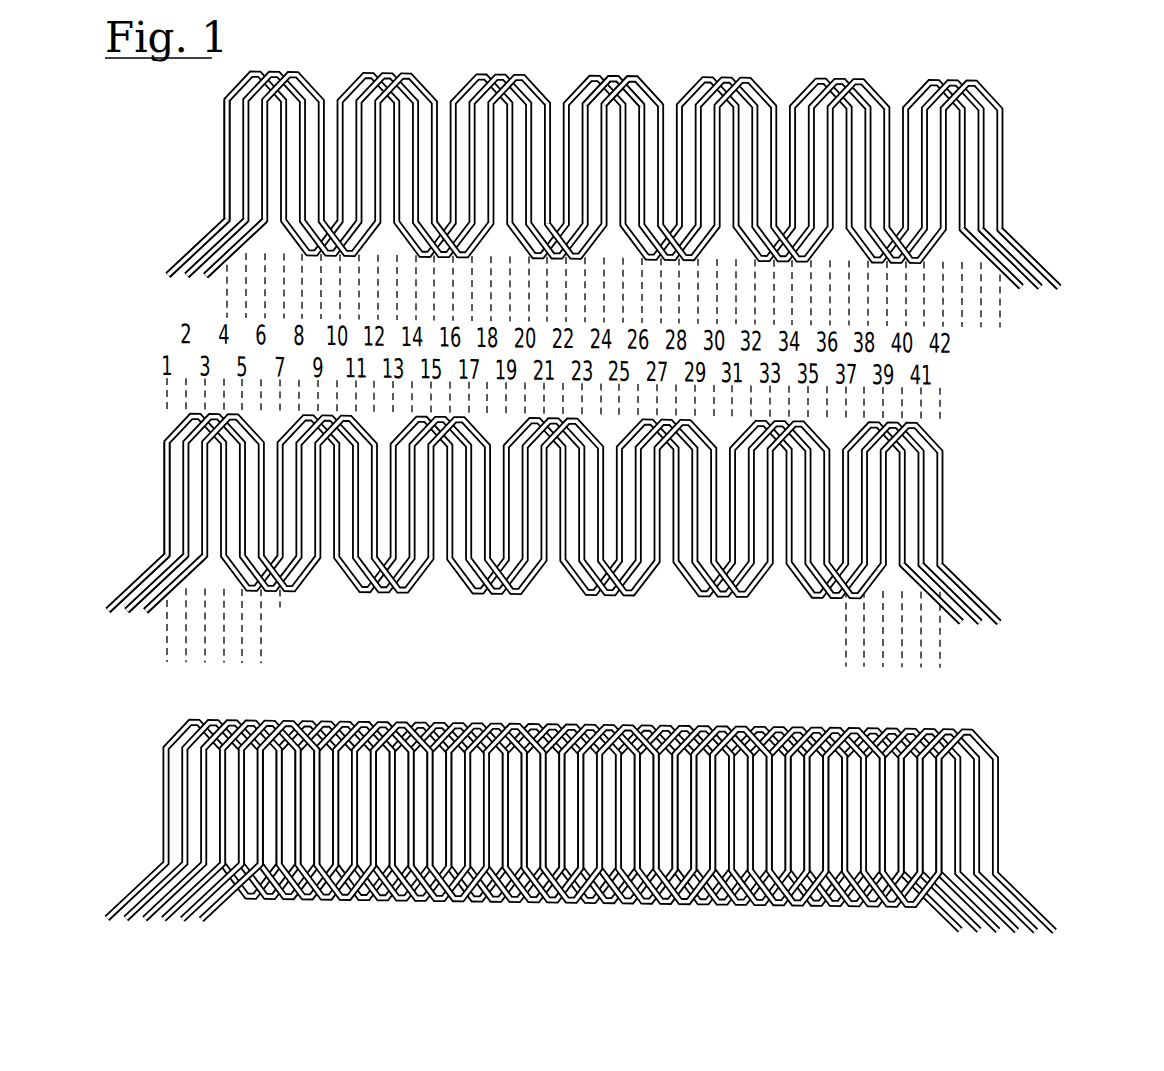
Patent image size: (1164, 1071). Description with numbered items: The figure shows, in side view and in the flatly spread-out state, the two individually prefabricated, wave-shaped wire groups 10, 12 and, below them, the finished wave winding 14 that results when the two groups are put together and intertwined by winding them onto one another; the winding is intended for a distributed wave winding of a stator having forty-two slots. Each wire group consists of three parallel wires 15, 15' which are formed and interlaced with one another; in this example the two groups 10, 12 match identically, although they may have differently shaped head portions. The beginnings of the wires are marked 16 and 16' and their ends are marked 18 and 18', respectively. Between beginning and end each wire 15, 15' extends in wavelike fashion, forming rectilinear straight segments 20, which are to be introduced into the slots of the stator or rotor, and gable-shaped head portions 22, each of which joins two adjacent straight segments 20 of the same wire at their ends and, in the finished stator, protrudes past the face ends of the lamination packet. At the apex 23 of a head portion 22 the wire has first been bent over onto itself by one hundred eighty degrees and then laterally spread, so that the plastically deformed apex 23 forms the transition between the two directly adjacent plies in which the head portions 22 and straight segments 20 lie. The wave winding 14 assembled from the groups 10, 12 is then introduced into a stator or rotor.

The wire group 10 is at (1005, 122).
The wire group 12 is at (947, 478).
The wave winding 14 is at (1000, 782).
The wire 15 is at (191, 159).
The beginning of wire 16 is at (192, 248).
The end of wire 18 is at (1010, 235).
The straight segment 20 is at (547, 123).
The head portion 22 is at (652, 87).
The apex 23 is at (612, 85).
The wire 15' is at (138, 486).
The beginning of wire 16' is at (154, 559).
The end of wire 18' is at (959, 567).